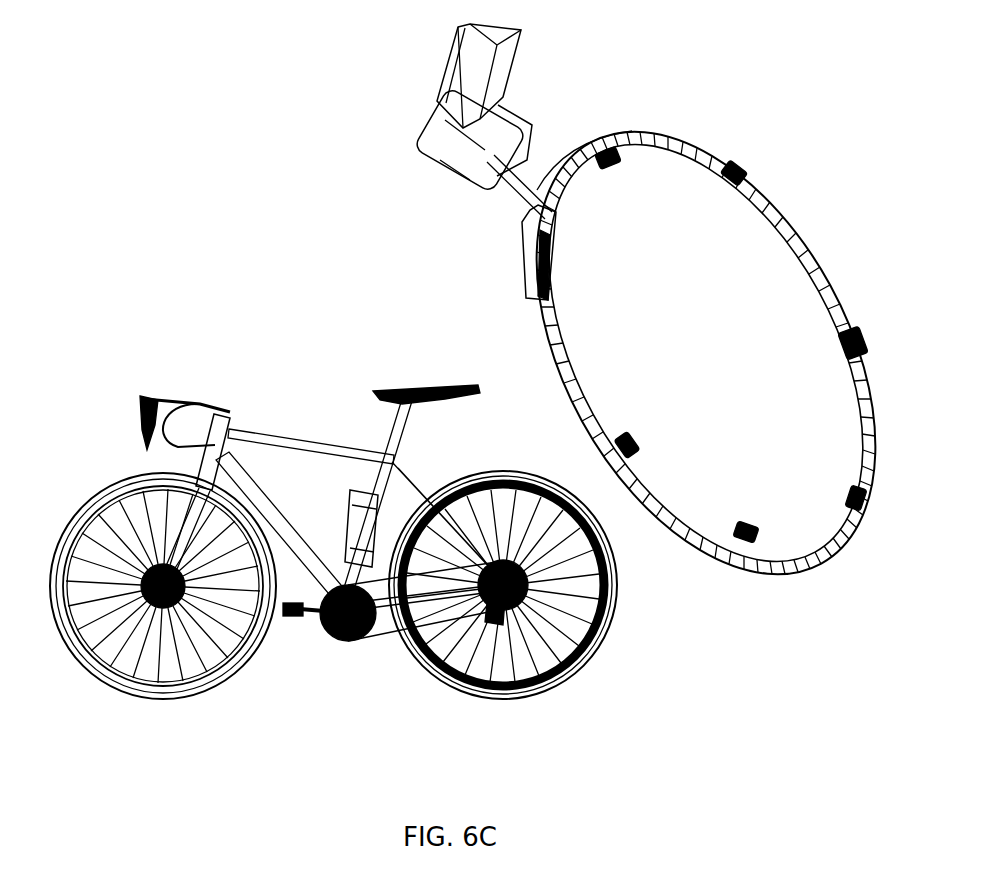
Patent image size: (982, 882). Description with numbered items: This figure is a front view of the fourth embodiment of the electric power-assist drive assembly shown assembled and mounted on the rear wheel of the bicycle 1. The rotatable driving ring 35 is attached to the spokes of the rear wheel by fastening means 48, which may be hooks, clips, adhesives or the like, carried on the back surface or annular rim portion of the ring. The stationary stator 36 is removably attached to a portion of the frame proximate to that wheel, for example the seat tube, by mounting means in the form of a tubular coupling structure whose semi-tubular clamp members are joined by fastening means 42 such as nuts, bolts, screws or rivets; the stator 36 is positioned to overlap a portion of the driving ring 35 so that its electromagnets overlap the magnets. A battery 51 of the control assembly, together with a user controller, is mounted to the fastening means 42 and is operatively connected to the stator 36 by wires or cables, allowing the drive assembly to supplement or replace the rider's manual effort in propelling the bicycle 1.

The bicycle 1 is at (105, 477).
The battery 51 is at (347, 490).
The fastening means 42 is at (364, 488).
The stator 36 is at (535, 253).
The fastening means 48 is at (840, 338).
The driving ring 35 is at (593, 645).